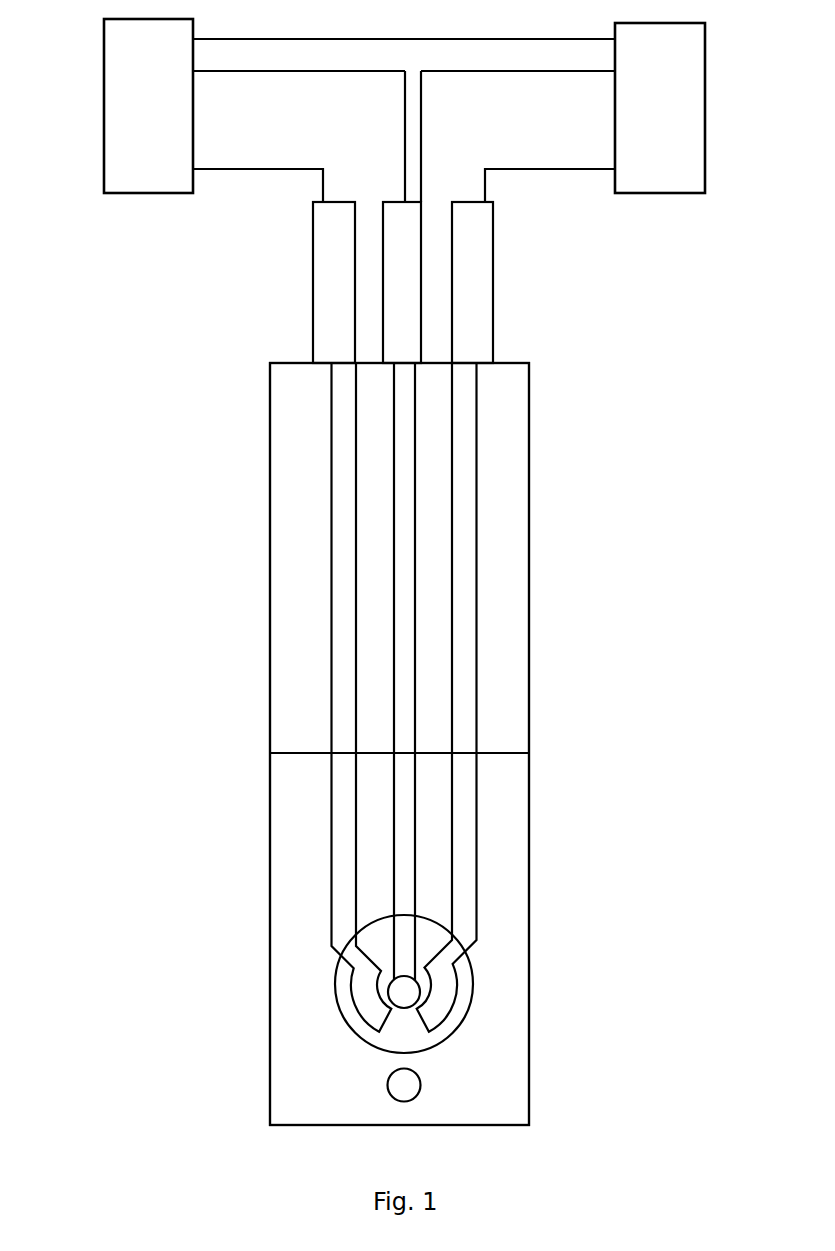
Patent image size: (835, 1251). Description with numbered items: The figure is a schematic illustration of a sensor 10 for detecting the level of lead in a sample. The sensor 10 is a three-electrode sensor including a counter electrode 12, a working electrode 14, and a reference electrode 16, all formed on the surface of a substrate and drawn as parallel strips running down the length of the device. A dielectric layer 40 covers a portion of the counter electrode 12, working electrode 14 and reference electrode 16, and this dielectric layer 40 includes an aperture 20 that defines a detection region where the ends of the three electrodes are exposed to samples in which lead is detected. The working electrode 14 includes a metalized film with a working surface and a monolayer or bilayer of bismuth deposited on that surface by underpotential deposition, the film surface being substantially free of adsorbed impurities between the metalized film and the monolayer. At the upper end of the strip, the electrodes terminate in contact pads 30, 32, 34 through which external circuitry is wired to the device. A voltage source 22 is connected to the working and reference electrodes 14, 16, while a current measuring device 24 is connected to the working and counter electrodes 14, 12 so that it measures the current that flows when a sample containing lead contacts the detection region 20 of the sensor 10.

The sensor 10 is at (590, 662).
The counter electrode 12 is at (326, 857).
The working electrode 14 is at (412, 858).
The reference electrode 16 is at (476, 806).
The aperture 20 is at (383, 1054).
The voltage source 22 is at (705, 82).
The current measuring device 24 is at (103, 143).
The first electrical contact 30 is at (354, 200).
The second electrical contact 32 is at (398, 200).
The third electrical contact 34 is at (468, 200).
The dielectric layer 40 is at (530, 985).